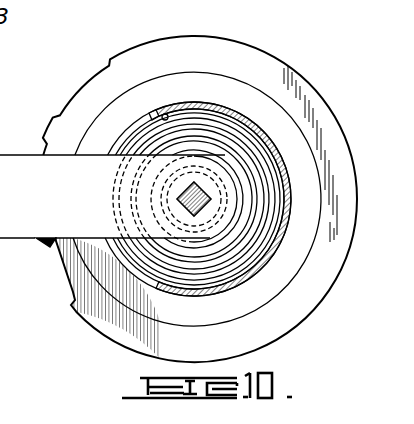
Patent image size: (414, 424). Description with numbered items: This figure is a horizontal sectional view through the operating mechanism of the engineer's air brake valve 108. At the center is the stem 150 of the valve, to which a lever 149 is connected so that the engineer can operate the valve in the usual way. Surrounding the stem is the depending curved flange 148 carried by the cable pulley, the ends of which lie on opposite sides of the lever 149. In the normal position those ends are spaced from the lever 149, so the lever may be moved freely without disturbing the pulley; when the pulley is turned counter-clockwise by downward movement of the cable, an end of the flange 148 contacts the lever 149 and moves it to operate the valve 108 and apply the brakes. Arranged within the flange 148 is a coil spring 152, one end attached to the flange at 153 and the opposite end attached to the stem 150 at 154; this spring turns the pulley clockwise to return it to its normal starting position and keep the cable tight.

The engineer's air brake valve 108 is at (274, 340).
The depending curved flange 148 is at (262, 133).
The lever 149 is at (112, 201).
The stem 150 is at (210, 191).
The coil spring 152 is at (148, 272).
The spring attachment to flange 153 is at (158, 108).
The spring attachment to stem 154 is at (172, 186).